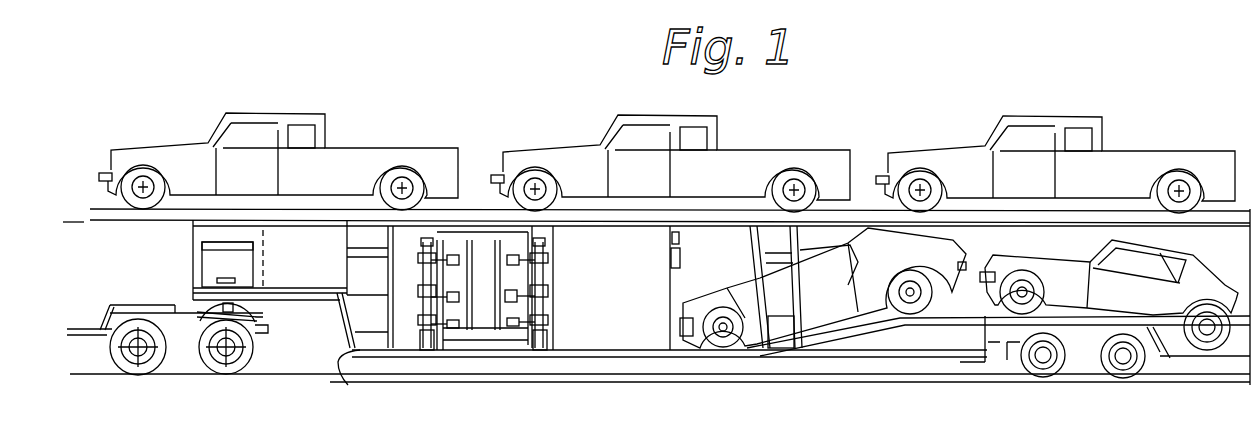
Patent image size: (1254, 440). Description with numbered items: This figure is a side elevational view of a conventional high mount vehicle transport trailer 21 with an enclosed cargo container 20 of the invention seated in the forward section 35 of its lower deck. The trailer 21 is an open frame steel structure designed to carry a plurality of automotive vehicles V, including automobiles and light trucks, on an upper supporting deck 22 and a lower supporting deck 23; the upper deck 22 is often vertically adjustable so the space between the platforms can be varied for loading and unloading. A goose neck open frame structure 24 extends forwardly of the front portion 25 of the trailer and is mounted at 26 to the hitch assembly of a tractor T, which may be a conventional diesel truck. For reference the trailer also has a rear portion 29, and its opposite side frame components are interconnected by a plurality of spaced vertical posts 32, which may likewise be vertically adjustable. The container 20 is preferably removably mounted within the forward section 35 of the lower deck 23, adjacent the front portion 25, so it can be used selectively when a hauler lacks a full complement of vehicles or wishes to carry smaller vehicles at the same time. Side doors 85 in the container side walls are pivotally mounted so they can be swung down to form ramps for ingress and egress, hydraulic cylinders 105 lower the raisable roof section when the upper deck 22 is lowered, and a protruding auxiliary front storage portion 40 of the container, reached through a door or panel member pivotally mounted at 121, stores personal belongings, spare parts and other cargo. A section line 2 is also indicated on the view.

The section line 2- 2 is at (77, 207).
The automotive vehicles V is at (408, 150).
The tractor T is at (100, 349).
The enclosed cargo container 20 is at (641, 351).
The vehicle transport trailer 21 is at (426, 368).
The upper supporting deck 22 is at (860, 209).
The lower supporting deck 23 is at (882, 346).
The goose neck open frame structure 24 is at (318, 305).
The front portion of the trailer 25 is at (351, 366).
The mounting of goose neck to hitch assembly 26 is at (215, 315).
The rear portion of the trailer 29 is at (251, 356).
The vertical posts 32 is at (387, 255).
The forward section of the lower deck 35 is at (565, 356).
The auxiliary front storage portion 40 is at (304, 247).
The side doors 85 is at (490, 345).
The hydraulic cylinders 105 is at (670, 268).
The pivotal mounting of door or panel member 121 is at (231, 243).